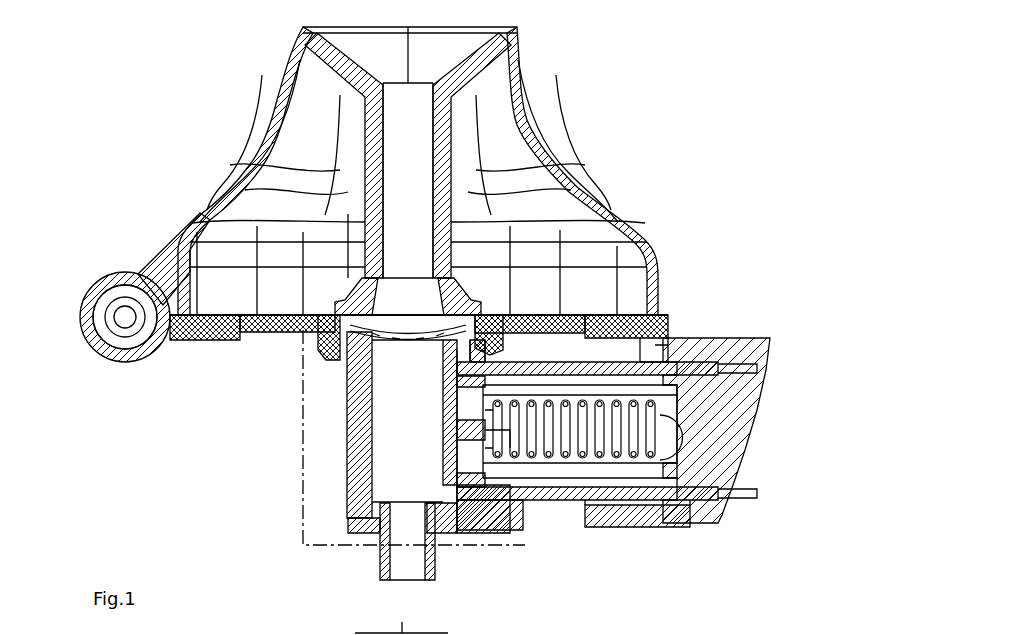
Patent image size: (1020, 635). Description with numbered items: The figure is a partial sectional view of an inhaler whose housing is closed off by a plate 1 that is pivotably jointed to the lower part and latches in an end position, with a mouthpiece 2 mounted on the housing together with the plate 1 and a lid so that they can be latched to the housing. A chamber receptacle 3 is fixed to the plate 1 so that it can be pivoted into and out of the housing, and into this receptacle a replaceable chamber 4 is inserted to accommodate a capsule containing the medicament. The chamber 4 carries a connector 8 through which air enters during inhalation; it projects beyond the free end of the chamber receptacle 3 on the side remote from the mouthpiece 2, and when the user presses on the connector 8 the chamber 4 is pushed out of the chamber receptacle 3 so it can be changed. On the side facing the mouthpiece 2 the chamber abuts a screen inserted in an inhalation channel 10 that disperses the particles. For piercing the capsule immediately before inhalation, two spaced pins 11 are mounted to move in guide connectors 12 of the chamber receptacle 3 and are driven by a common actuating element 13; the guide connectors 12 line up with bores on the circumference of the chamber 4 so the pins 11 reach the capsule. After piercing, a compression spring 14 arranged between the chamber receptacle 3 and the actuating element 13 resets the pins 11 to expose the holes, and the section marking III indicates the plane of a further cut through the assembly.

The plate 1 is at (667, 313).
The mouthpiece 2 is at (538, 137).
The chamber receptacle 3 is at (352, 518).
The chamber 4 is at (365, 433).
The connector 8 is at (410, 567).
The inhalation channel 10 is at (413, 148).
The pins 11 is at (582, 368).
The guide connectors 12 is at (553, 312).
The actuating element 13 is at (727, 412).
The compression spring 14 is at (450, 490).
The section line III is at (300, 473).